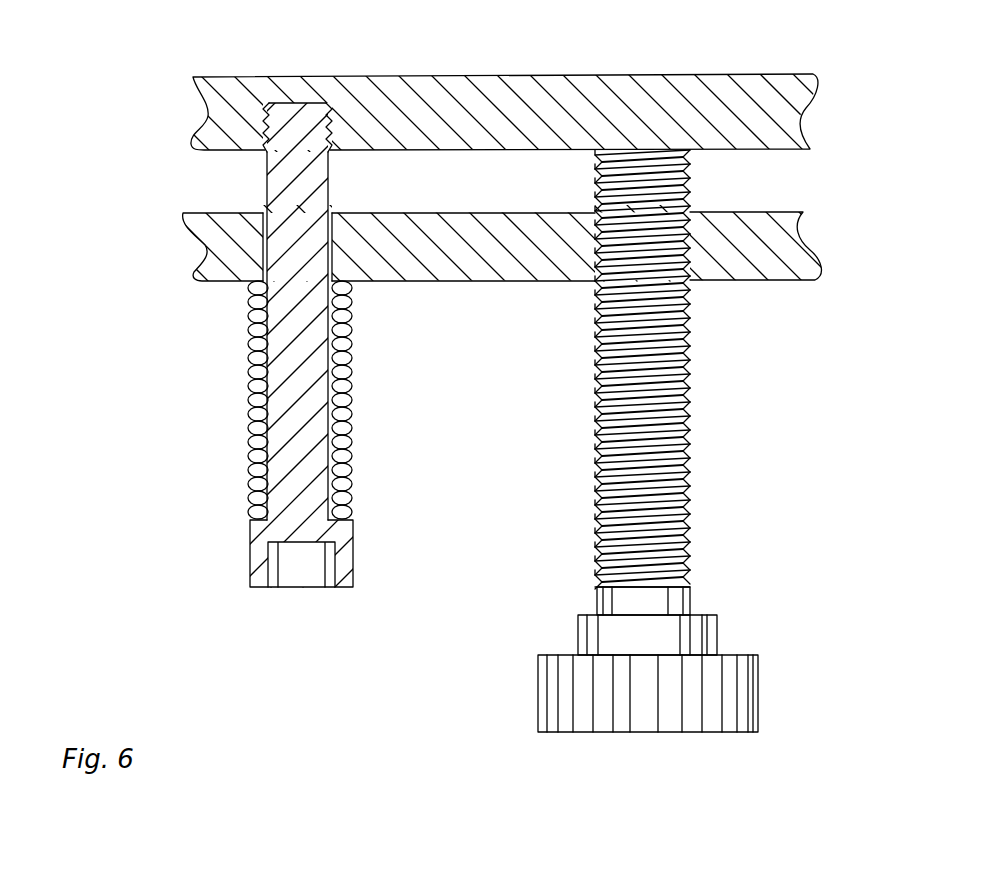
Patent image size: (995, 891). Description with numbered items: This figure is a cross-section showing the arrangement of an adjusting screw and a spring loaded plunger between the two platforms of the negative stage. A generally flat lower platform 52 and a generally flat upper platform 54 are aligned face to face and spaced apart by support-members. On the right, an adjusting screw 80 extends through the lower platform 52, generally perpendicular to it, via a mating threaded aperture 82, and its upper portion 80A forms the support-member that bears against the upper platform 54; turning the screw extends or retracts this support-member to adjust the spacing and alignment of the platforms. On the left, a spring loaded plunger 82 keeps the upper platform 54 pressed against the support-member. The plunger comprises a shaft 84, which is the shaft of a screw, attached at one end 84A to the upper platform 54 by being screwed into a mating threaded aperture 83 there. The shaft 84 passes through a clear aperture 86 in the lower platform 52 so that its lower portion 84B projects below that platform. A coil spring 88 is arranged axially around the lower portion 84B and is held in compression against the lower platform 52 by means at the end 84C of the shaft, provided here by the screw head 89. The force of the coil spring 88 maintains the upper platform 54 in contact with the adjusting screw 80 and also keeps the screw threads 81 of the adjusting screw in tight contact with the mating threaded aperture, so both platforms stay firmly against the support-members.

The upper platform 54 is at (787, 75).
The lower platform 52 is at (796, 211).
The threaded aperture 83 is at (267, 114).
The shaft 84 is at (409, 331).
The end of shaft 84A is at (294, 113).
The lower portion of shaft 84B is at (312, 327).
The end of shaft 84C is at (301, 501).
The clear aperture 86 is at (263, 253).
The coil spring 88 is at (352, 452).
The screw head 89 is at (347, 566).
The spring loaded plunger 82 is at (236, 433).
The adjusting screw 80 is at (656, 441).
The upper portion of adjusting screw 80A is at (641, 369).
The screw threads 81 is at (692, 378).